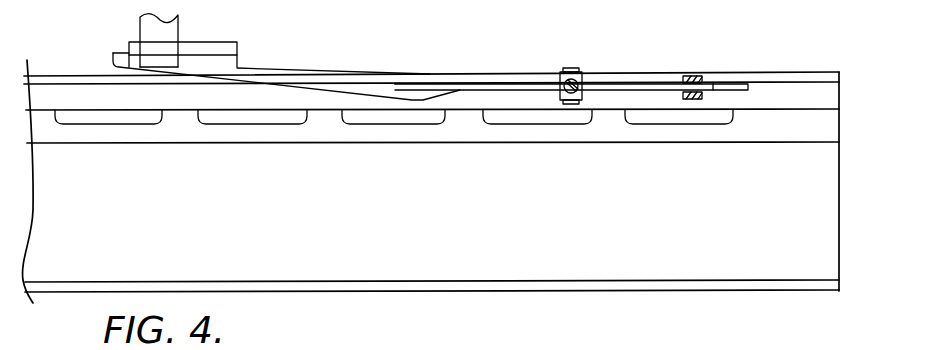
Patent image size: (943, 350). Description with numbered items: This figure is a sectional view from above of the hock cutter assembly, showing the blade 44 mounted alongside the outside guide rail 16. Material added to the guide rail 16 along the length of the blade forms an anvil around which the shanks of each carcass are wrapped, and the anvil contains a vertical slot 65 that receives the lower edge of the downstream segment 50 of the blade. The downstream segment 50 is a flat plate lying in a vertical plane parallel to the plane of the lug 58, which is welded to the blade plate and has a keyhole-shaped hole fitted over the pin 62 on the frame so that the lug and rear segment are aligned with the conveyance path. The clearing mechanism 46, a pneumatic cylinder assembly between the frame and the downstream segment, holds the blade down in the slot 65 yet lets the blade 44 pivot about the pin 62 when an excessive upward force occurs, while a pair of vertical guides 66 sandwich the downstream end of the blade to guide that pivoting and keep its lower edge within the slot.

The guide rail 16 is at (112, 95).
The blade 44 is at (459, 98).
The clearing mechanism 46 is at (580, 77).
The downstream segment 50 is at (622, 86).
The lug 58 is at (213, 45).
The pin 62 is at (148, 28).
The vertical slot 65 is at (740, 92).
The vertical guides 66 is at (693, 76).